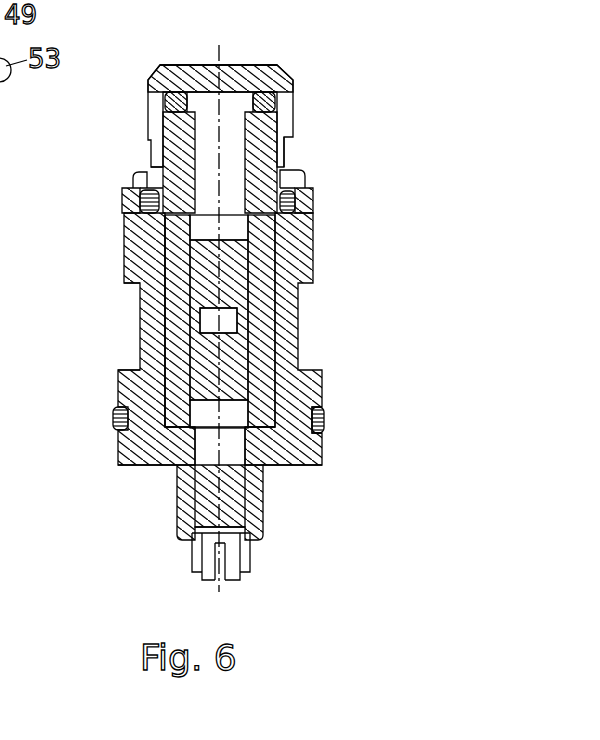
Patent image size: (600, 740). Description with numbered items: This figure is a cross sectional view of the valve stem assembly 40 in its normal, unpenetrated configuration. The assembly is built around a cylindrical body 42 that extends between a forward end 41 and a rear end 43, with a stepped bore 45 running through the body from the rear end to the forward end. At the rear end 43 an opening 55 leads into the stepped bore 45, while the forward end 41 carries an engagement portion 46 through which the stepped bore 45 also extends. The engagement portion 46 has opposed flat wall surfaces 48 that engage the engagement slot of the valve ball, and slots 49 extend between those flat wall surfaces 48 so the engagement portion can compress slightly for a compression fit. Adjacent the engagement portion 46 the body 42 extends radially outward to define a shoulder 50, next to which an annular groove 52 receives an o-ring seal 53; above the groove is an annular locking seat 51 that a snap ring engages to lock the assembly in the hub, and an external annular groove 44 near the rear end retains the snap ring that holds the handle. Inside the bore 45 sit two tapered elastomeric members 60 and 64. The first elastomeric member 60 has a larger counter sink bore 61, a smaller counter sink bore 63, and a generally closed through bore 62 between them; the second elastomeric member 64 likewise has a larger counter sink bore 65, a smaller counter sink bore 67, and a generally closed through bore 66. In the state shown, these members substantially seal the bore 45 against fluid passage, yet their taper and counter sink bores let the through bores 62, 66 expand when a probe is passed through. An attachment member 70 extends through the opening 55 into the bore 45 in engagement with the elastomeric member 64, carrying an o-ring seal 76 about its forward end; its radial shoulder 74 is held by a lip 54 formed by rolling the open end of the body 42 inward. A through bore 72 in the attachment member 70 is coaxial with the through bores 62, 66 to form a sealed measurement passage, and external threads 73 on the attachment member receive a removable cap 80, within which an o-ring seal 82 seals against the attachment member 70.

The valve stem assembly 40 is at (343, 83).
The forward end 41 is at (251, 556).
The cylindrical body 42 is at (299, 304).
The rear end 43 is at (311, 183).
The external annular groove 44 is at (316, 231).
The stepped bore 45 is at (236, 488).
The engagement portion 46 is at (178, 523).
The opposed flat wall surfaces 48 is at (192, 557).
The slots 49 is at (222, 581).
The shoulder 50 is at (318, 463).
The annular locking seat 51 is at (140, 368).
The annular groove 52 is at (324, 430).
The o-ring seal 53 is at (325, 420).
The lip 54 is at (298, 172).
The opening 55 is at (163, 168).
The elastomeric member 60 is at (178, 357).
The larger counter sink bore 61 is at (215, 415).
The generally closed through bore 62 is at (190, 385).
The smaller counter sink bore 63 is at (255, 333).
The elastomeric member 64 is at (175, 260).
The larger counter sink bore 65 is at (237, 232).
The generally closed through bore 66 is at (142, 297).
The smaller counter sink bore 67 is at (163, 288).
The attachment member 70 is at (271, 124).
The through bore 72 is at (230, 128).
The external threads 73 is at (283, 142).
The radial shoulder 74 is at (143, 186).
The o-ring seal 76 is at (300, 207).
The removable cap 80 is at (154, 63).
The o-ring seal 82 is at (168, 98).